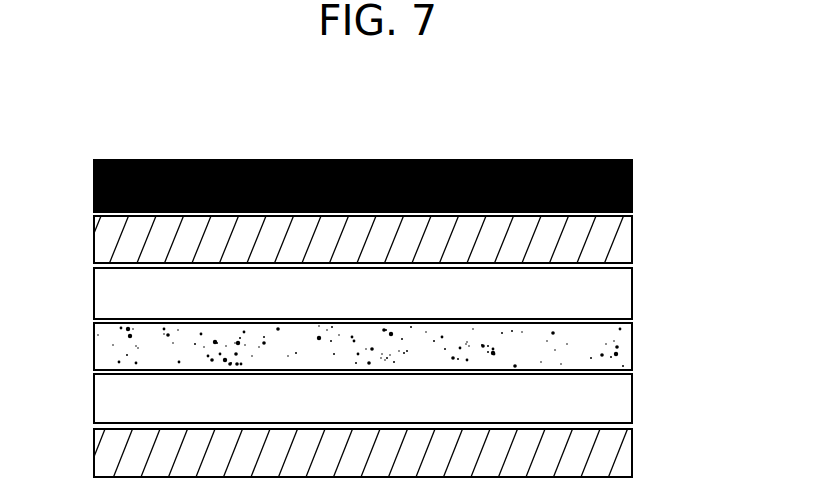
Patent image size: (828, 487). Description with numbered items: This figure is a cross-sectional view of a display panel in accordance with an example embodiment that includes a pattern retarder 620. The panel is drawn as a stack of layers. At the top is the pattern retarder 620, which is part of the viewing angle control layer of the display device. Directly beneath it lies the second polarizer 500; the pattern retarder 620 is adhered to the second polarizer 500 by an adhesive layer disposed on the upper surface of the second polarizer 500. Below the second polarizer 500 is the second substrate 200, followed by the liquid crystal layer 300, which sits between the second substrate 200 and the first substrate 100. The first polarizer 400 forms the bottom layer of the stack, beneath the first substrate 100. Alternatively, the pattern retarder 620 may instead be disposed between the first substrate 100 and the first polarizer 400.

The pattern retarder 620 is at (626, 183).
The second polarizer 500 is at (625, 238).
The second substrate 200 is at (625, 292).
The liquid crystal layer 300 is at (625, 347).
The first substrate 100 is at (625, 399).
The first polarizer 400 is at (625, 455).